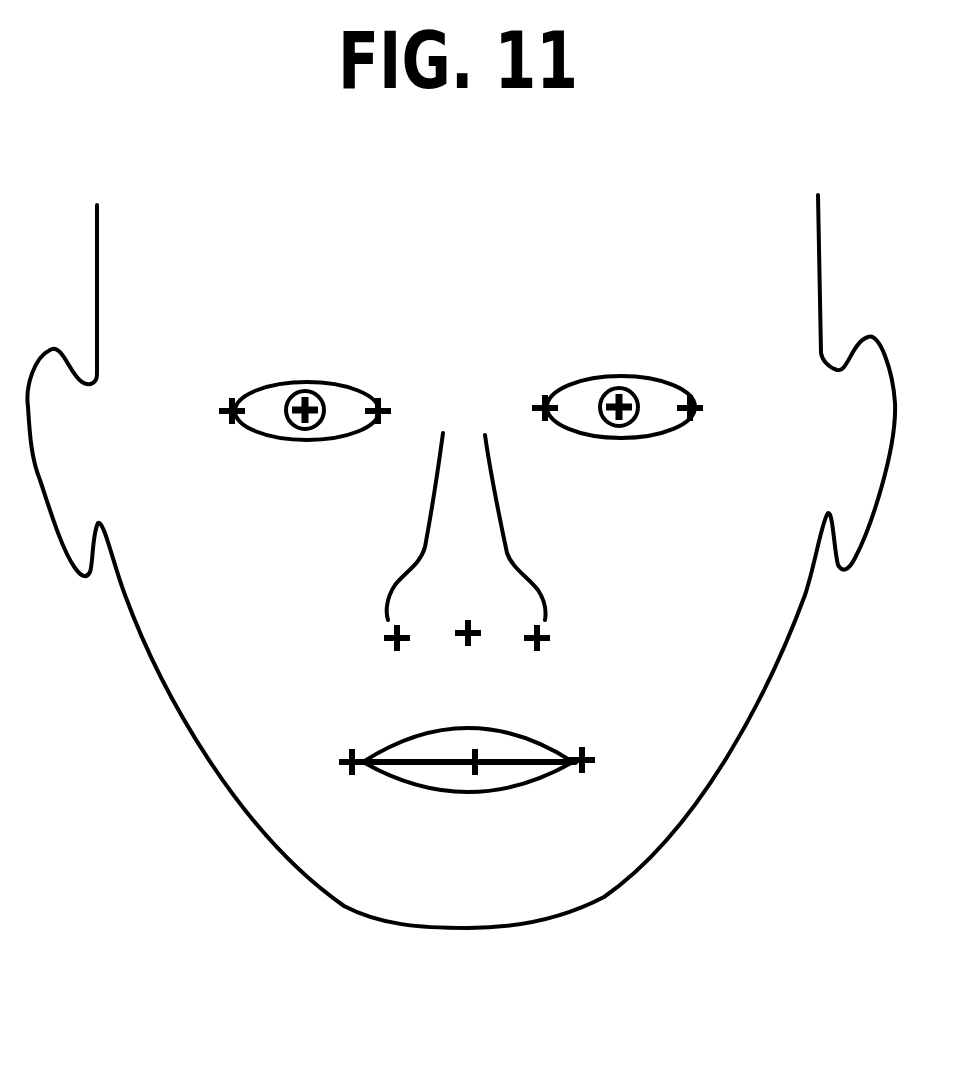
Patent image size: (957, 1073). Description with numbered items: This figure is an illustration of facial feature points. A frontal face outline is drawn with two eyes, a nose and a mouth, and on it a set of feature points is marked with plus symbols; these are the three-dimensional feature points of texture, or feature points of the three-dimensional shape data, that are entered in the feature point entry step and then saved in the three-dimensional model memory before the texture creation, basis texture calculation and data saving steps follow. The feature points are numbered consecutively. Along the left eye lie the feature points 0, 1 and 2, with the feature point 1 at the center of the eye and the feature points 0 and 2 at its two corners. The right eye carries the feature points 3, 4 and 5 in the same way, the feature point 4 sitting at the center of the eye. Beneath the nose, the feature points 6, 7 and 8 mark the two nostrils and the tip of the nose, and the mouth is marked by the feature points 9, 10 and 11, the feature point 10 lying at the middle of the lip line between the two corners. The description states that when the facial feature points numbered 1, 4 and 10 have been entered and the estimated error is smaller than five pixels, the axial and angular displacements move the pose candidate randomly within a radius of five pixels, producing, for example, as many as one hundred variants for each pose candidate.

The left eye outer corner feature point 0 is at (229, 388).
The facial feature point 1 is at (305, 379).
The left eye inner corner feature point 2 is at (381, 391).
The right eye inner corner feature point 3 is at (542, 385).
The facial feature point 4 is at (619, 377).
The right eye outer corner feature point 5 is at (695, 386).
The left nostril feature point 6 is at (397, 665).
The nose tip feature point 7 is at (468, 662).
The right nostril feature point 8 is at (537, 665).
The left mouth corner feature point 9 is at (352, 788).
The facial feature point 10 is at (475, 797).
The right mouth corner feature point 11 is at (583, 786).